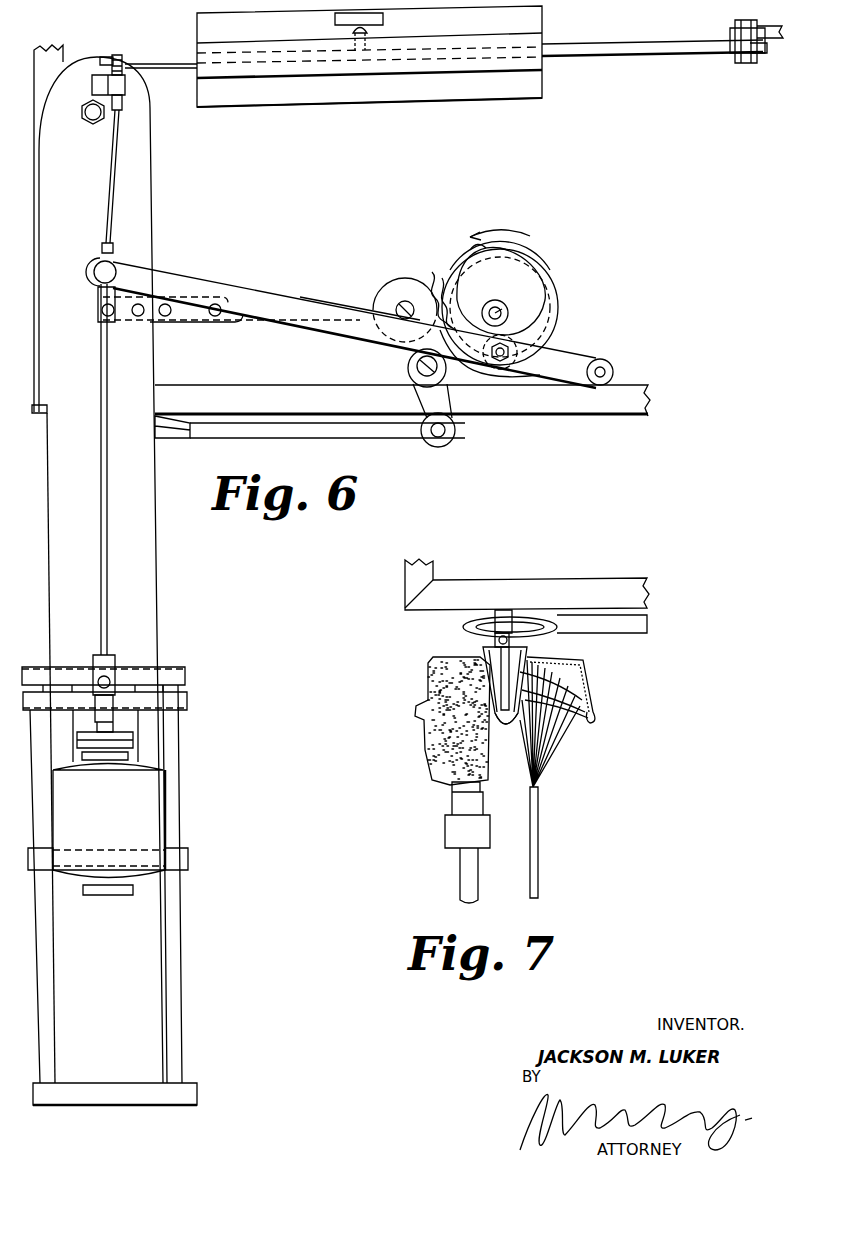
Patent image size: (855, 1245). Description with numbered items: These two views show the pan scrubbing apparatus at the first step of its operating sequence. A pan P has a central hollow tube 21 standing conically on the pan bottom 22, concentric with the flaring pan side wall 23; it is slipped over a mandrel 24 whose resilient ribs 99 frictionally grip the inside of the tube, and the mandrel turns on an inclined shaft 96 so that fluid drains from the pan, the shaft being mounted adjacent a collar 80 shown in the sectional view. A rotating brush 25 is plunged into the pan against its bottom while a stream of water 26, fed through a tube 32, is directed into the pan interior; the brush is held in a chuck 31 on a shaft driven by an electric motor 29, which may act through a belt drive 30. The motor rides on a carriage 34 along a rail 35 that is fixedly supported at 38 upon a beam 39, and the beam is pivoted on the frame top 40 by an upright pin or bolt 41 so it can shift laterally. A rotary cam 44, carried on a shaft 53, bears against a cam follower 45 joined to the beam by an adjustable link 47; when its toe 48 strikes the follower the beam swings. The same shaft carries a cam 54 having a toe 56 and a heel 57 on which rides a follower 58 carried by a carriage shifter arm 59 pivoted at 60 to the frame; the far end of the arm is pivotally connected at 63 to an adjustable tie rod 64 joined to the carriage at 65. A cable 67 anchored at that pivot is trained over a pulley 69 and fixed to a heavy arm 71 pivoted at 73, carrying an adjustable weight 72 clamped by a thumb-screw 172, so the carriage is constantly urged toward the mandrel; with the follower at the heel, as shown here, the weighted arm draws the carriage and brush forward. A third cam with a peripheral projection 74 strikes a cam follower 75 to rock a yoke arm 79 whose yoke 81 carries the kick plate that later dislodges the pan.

In FIG. 6, the thumb-screw 172 is at (383, 16).
In FIG. 6, the adjustable weight 72 is at (542, 24).
In FIG. 6, the heavy arm 71 is at (623, 52).
In FIG. 6, the pivot 73 is at (745, 63).
In FIG. 6, the pulley 69 is at (127, 107).
In FIG. 6, the upright pin or bolt 41 is at (88, 118).
In FIG. 6, the cable 67 is at (115, 176).
In FIG. 6, the pivotal connection 63 is at (96, 276).
In FIG. 6, the carriage shifter arm 59 is at (262, 290).
In FIG. 6, the adjustable link 47 is at (357, 301).
In FIG. 6, the cam follower 45 is at (383, 290).
In FIG. 6, the toe 48 is at (440, 280).
In FIG. 6, the peripheral projection 74 is at (468, 238).
In FIG. 6, the toe 56 is at (515, 242).
In FIG. 6, the cam 54 is at (525, 270).
In FIG. 6, the shaft 53 is at (497, 310).
In FIG. 6, the rotary cam 44 is at (558, 299).
In FIG. 6, the heel 57 is at (560, 325).
In FIG. 6, the follower 58 is at (540, 340).
In FIG. 6, the pivot 60 is at (612, 368).
In FIG. 6, the cam follower 75 is at (407, 370).
In FIG. 6, the frame top 40 is at (555, 405).
In FIG. 6, the yoke arm 79 is at (296, 437).
In FIG. 7, the yoke arm 79 is at (633, 633).
In FIG. 6, the yoke 81 is at (166, 434).
In FIG. 6, the adjustable tie rod 64 is at (103, 521).
In FIG. 6, the beam 39 is at (150, 569).
In FIG. 6, the pivotal connection 65 is at (112, 672).
In FIG. 6, the fixed support 38 is at (172, 668).
In FIG. 6, the belt drive 30 is at (130, 740).
In FIG. 6, the carriage 34 is at (158, 747).
In FIG. 6, the electric motor 29 is at (150, 817).
In FIG. 6, the rail or track 35 is at (52, 962).
In FIG. 7, the shaft 96 is at (505, 613).
In FIG. 7, the ring 80 is at (462, 627).
In FIG. 7, the pan bottom 22 is at (553, 648).
In FIG. 7, the mandrel 24 is at (517, 670).
In FIG. 7, the pan side wall 23 is at (590, 684).
In FIG. 7, the pan P is at (590, 716).
In FIG. 7, the resilient ribs 99 is at (520, 697).
In FIG. 7, the central hollow tube 21 is at (527, 723).
In FIG. 7, the rotating brush 25 is at (425, 752).
In FIG. 7, the stream of water 26 is at (545, 752).
In FIG. 7, the chuck 31 is at (450, 832).
In FIG. 7, the tube 32 is at (540, 866).